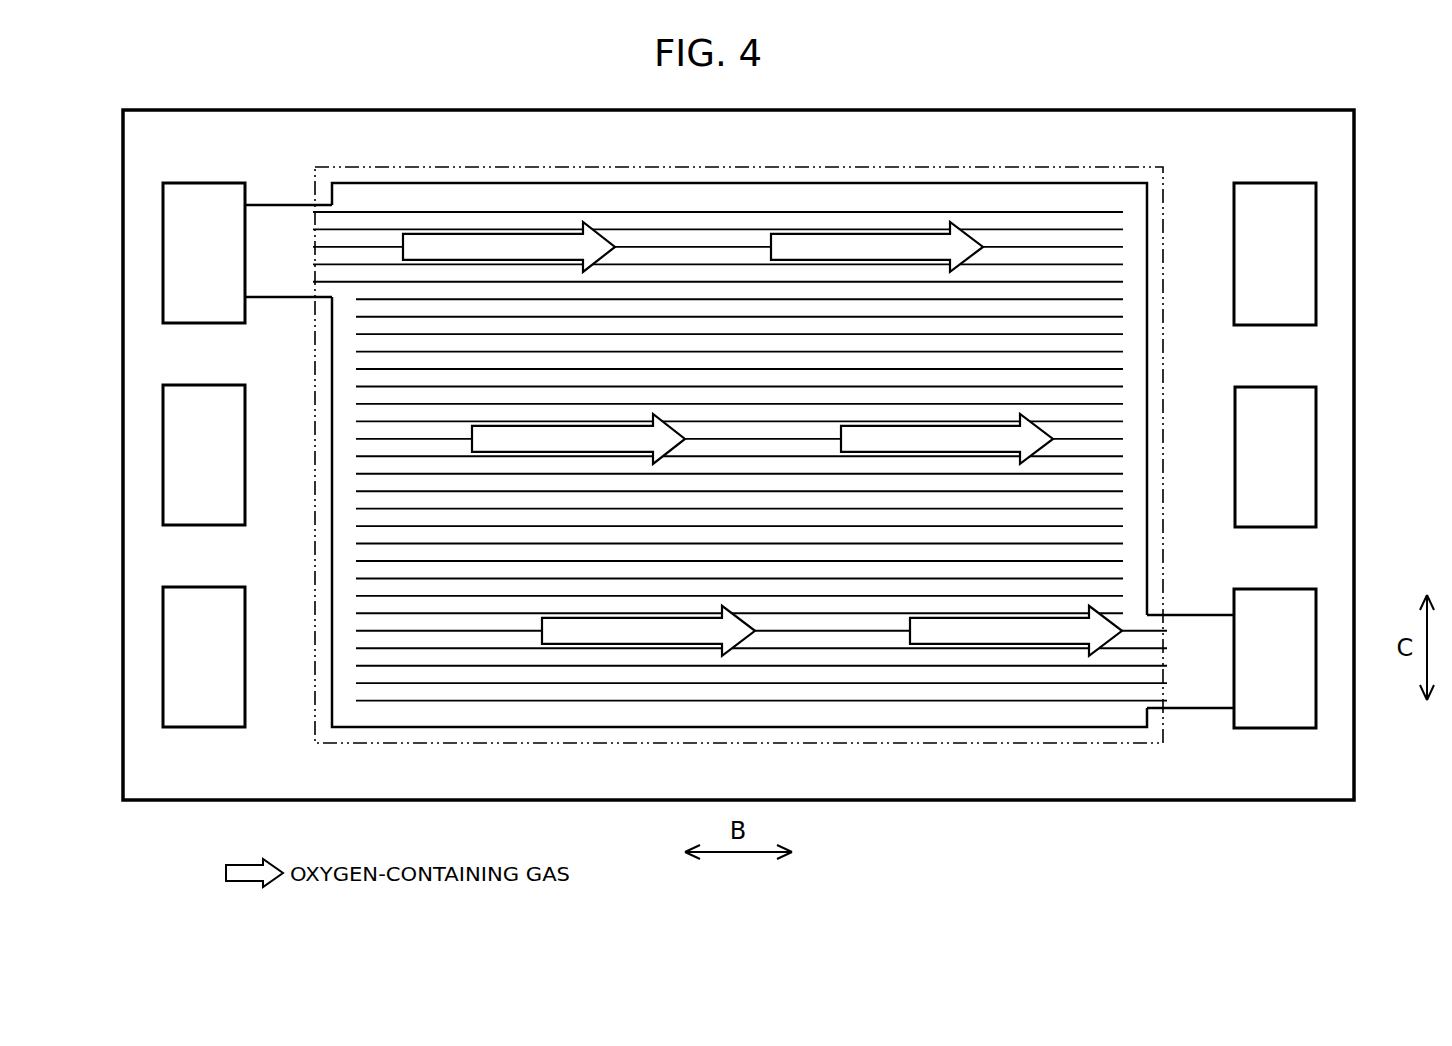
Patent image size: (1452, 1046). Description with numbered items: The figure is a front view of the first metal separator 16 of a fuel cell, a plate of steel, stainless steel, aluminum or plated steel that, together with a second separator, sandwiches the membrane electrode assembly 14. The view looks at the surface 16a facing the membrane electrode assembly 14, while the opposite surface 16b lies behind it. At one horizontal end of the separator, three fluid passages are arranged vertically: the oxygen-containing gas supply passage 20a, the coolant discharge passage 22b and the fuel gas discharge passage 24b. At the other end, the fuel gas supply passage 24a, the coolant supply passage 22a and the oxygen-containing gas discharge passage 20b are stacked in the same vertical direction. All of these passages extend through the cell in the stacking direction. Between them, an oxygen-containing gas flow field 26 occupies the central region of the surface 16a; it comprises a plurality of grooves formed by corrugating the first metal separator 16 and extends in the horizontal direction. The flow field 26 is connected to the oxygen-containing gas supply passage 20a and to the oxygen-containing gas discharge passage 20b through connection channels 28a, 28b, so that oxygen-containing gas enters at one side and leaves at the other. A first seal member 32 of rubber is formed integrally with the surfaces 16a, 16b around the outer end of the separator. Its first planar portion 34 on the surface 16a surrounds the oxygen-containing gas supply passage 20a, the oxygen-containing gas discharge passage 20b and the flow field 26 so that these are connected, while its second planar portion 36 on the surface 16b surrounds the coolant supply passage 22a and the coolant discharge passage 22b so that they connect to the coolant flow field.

The membrane electrode assembly 14 is at (1033, 165).
The first metal separator 16 is at (1074, 79).
The surface 16a is at (886, 762).
The surface 16b is at (950, 762).
The oxygen-containing gas supply passage 20a is at (204, 253).
The oxygen-containing gas discharge passage 20b is at (1275, 658).
The coolant supply passage 22a is at (1279, 537).
The coolant discharge passage 22b is at (200, 535).
The fuel gas supply passage 24a is at (1275, 254).
The fuel gas discharge passage 24b is at (204, 657).
The oxygen-containing gas flow field 26 is at (499, 657).
The connection channel 28a is at (330, 247).
The connection channel 28b is at (1150, 665).
The first seal member 32 is at (867, 142).
The first planar portion 34 is at (447, 128).
The second planar portion 36 is at (447, 128).